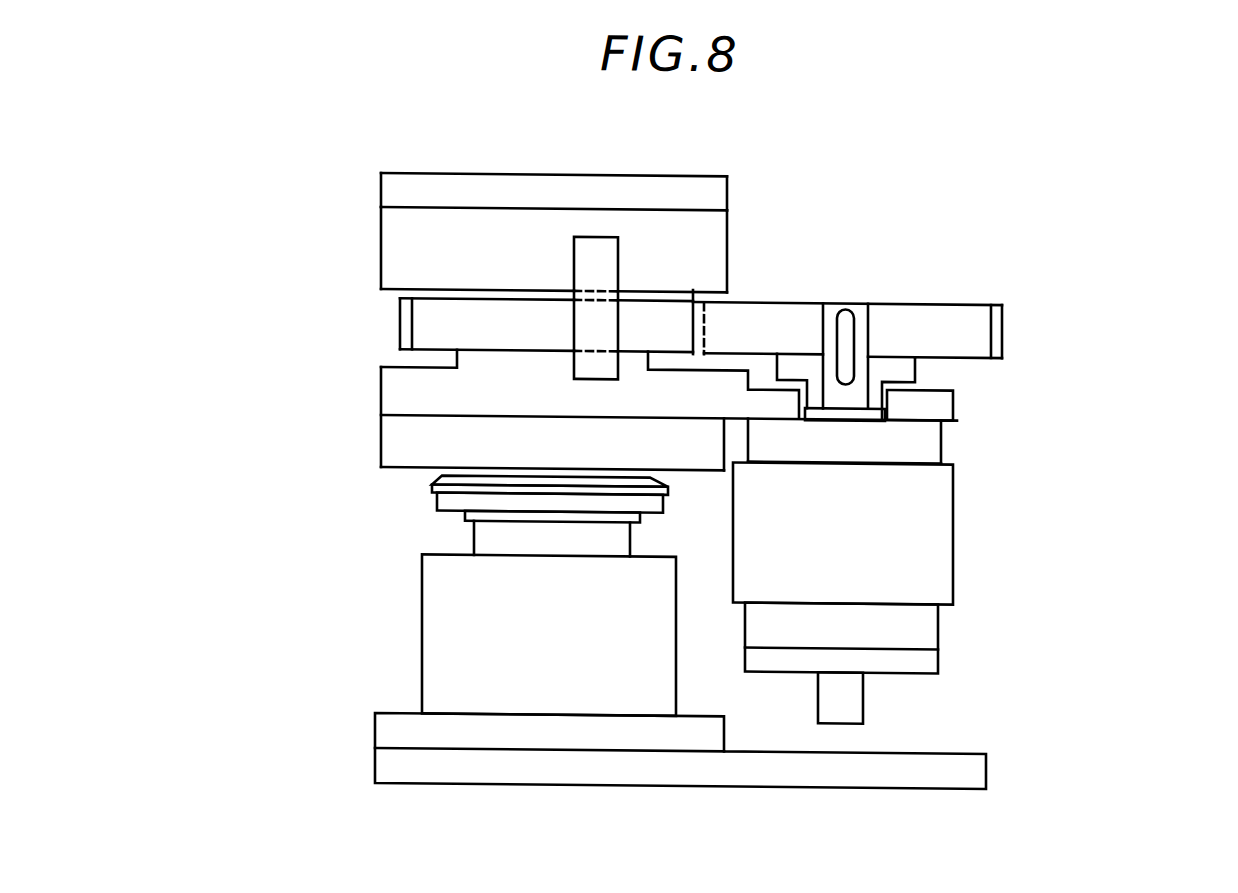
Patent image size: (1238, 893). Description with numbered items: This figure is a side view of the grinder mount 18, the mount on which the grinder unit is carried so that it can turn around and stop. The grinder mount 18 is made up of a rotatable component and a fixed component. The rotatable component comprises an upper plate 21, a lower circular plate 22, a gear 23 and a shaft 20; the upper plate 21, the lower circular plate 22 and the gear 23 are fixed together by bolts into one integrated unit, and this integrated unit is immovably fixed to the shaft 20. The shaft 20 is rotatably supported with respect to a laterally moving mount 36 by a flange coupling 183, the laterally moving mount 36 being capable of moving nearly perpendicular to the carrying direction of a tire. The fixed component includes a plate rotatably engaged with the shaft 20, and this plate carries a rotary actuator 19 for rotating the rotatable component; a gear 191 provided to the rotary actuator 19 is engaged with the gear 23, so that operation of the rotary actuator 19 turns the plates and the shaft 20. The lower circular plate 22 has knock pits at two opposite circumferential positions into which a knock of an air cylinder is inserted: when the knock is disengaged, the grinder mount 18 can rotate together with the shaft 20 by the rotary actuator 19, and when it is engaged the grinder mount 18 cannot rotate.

The grinder mount 18 is at (857, 250).
The rotary actuator 19 is at (944, 525).
The shaft 20 is at (482, 532).
The upper plate 21 is at (398, 182).
The lower circular plate 22 is at (398, 237).
The gear 23 is at (428, 325).
The laterally moving mount 36 is at (977, 764).
The flange coupling 183 is at (442, 631).
The gear 191 is at (973, 324).